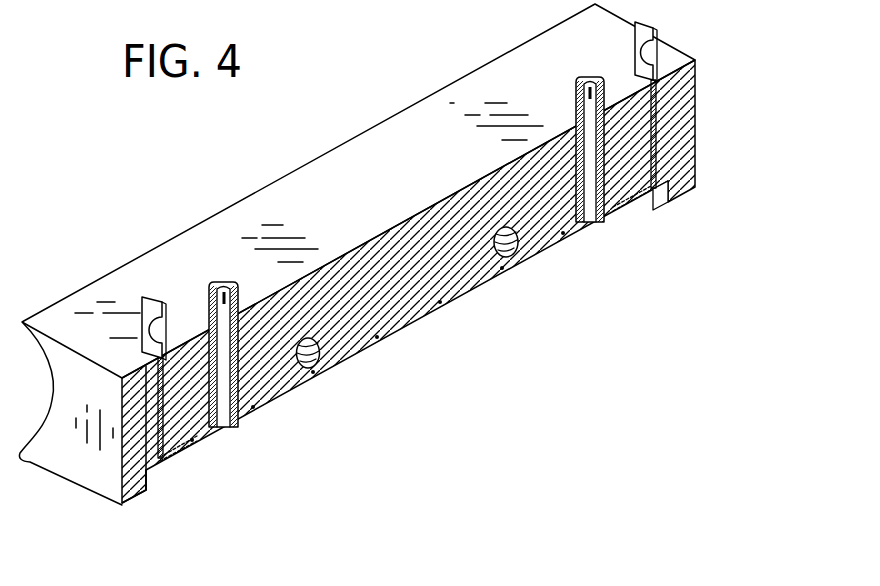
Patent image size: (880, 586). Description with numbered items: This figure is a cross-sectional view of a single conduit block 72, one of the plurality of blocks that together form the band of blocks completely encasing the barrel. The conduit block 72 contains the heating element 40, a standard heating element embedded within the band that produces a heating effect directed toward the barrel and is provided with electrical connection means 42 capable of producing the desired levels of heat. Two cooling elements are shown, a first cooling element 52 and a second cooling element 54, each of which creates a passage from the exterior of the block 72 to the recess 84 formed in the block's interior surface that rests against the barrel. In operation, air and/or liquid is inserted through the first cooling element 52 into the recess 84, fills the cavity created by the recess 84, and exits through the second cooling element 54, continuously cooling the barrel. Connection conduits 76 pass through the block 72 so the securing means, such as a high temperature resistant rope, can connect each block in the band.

The heating element 40 is at (448, 395).
The electrical connection means 42 is at (147, 297).
The first cooling element 52 is at (222, 282).
The second cooling element 54 is at (588, 78).
The conduit block 72 is at (380, 117).
The connection conduit 76 is at (318, 355).
The recess 84 is at (150, 478).